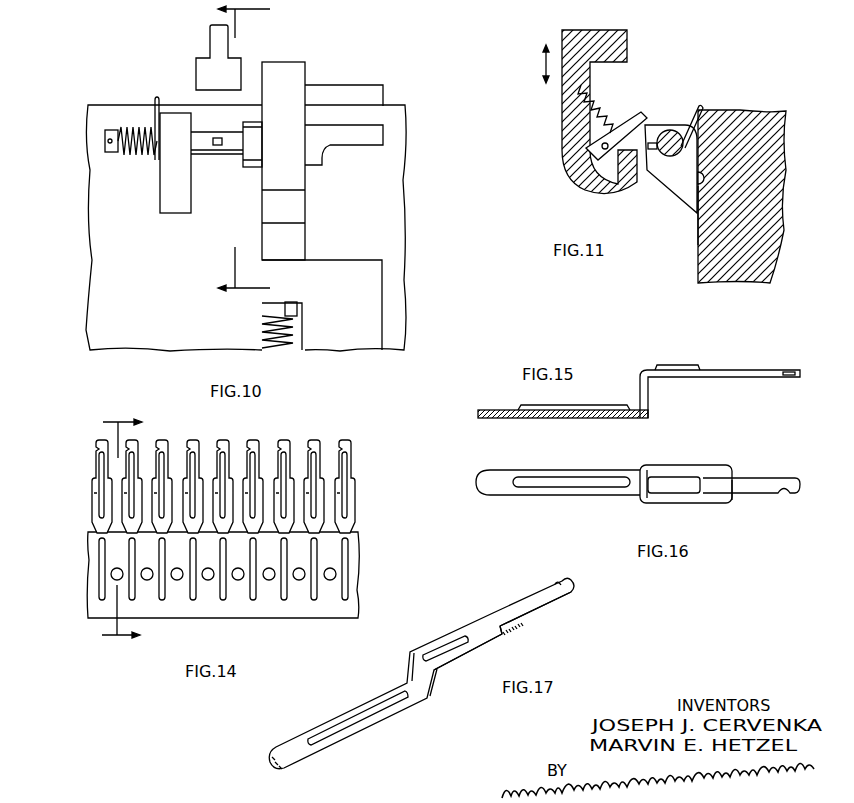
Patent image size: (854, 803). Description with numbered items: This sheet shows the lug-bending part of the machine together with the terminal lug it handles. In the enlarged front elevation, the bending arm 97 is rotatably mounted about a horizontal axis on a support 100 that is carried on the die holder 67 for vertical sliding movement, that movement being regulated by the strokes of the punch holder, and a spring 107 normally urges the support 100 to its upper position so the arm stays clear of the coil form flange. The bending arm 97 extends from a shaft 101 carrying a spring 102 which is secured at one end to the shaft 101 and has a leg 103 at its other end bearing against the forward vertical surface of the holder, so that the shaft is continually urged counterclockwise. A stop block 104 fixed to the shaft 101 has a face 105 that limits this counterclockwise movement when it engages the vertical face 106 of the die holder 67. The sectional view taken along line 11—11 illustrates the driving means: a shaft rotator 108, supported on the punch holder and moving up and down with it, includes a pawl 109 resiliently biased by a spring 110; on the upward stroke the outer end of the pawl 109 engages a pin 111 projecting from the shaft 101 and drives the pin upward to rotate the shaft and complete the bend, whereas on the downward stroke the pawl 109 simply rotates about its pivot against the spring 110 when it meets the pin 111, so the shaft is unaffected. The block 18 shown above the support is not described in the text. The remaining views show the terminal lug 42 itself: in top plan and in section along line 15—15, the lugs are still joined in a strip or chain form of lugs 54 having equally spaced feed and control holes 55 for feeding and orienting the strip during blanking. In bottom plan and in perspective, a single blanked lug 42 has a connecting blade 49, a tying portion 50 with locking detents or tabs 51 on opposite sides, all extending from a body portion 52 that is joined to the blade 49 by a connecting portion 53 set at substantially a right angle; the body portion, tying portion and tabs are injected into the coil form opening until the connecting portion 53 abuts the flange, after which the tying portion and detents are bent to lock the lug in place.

In FIG. 10, the section line 11— 11 is at (256, 150).
In FIG. 14, the section line 15— 15 is at (108, 529).
In FIG. 10, the actuator block 18 is at (238, 68).
In FIG. 15, the terminal lug 42 is at (710, 364).
In FIG. 16, the terminal lug 42 is at (673, 461).
In FIG. 17, the terminal lug 42 is at (447, 624).
In FIG. 16, the connecting blade 49 is at (565, 495).
In FIG. 17, the connecting blade 49 is at (350, 738).
In FIG. 16, the tying portion 50 is at (768, 478).
In FIG. 17, the tying portion 50 is at (537, 616).
In FIG. 16, the locking detents or tabs 51 is at (715, 502).
In FIG. 17, the locking detents or tabs 51 is at (502, 630).
In FIG. 17, the body portion 52 is at (453, 656).
In FIG. 17, the connecting portion 53 is at (428, 684).
In FIG. 14, the strip or chain form of lugs 54 is at (172, 624).
In FIG. 14, the feed and control holes 55 is at (270, 581).
In FIG. 10, the die holder 67 is at (108, 303).
In FIG. 11, the die holder 67 is at (710, 253).
In FIG. 10, the bending arm 97 is at (375, 120).
In FIG. 10, the support 100 is at (292, 90).
In FIG. 10, the shaft 101 is at (233, 158).
In FIG. 11, the shaft 101 is at (665, 130).
In FIG. 10, the spring 102 is at (118, 157).
In FIG. 11, the spring 102 is at (697, 108).
In FIG. 10, the leg 103 is at (136, 117).
In FIG. 10, the stop block 104 is at (172, 202).
In FIG. 11, the stop block 104 is at (665, 180).
In FIG. 11, the face 105 is at (700, 187).
In FIG. 11, the vertical face 106 is at (697, 230).
In FIG. 10, the spring 107 is at (298, 337).
In FIG. 11, the shaft rotator 108 is at (572, 30).
In FIG. 11, the pawl 109 is at (627, 118).
In FIG. 11, the spring 110 is at (603, 100).
In FIG. 10, the pin 111 is at (217, 138).
In FIG. 11, the pin 111 is at (643, 181).